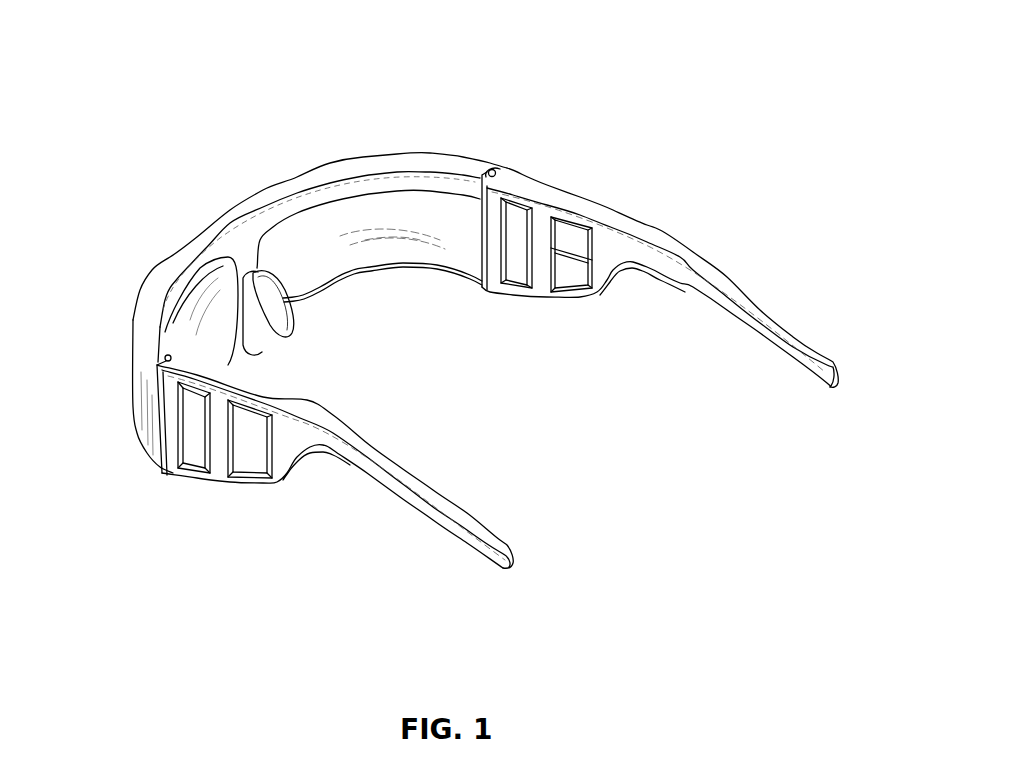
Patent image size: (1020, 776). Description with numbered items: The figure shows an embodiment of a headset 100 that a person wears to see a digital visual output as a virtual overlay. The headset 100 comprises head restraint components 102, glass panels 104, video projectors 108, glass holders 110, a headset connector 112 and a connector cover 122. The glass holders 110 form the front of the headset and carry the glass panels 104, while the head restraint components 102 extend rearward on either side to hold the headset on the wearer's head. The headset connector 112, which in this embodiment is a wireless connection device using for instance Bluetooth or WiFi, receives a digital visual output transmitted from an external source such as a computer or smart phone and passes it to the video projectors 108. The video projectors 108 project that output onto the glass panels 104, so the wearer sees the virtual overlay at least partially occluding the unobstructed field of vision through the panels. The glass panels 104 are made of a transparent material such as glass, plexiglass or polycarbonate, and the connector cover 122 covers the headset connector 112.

The headset 100 is at (141, 81).
The head restraint components 102 is at (483, 545).
The glass panels 104 is at (303, 258).
The video projectors 108 is at (515, 217).
The glass holders 110 is at (153, 290).
The headset connector 112 is at (577, 235).
The connector cover 122 is at (247, 460).